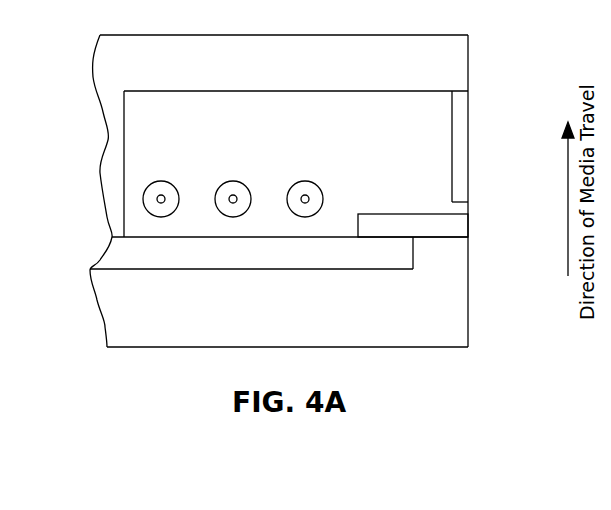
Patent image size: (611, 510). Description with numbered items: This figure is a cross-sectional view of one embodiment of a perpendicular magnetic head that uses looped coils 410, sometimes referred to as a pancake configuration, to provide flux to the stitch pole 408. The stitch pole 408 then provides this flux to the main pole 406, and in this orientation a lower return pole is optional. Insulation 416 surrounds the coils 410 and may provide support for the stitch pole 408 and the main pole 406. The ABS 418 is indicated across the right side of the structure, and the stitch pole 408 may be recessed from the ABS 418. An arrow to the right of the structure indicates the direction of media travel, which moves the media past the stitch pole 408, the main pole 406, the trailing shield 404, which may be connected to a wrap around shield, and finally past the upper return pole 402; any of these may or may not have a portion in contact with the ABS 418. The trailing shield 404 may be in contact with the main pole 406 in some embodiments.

The upper return pole 402 is at (373, 72).
The trailing shield 404 is at (470, 127).
The main pole 406 is at (470, 221).
The stitch pole 408 is at (314, 264).
The looped coils 410 is at (161, 181).
The insulation 416 is at (413, 171).
The ABS 418 is at (468, 53).